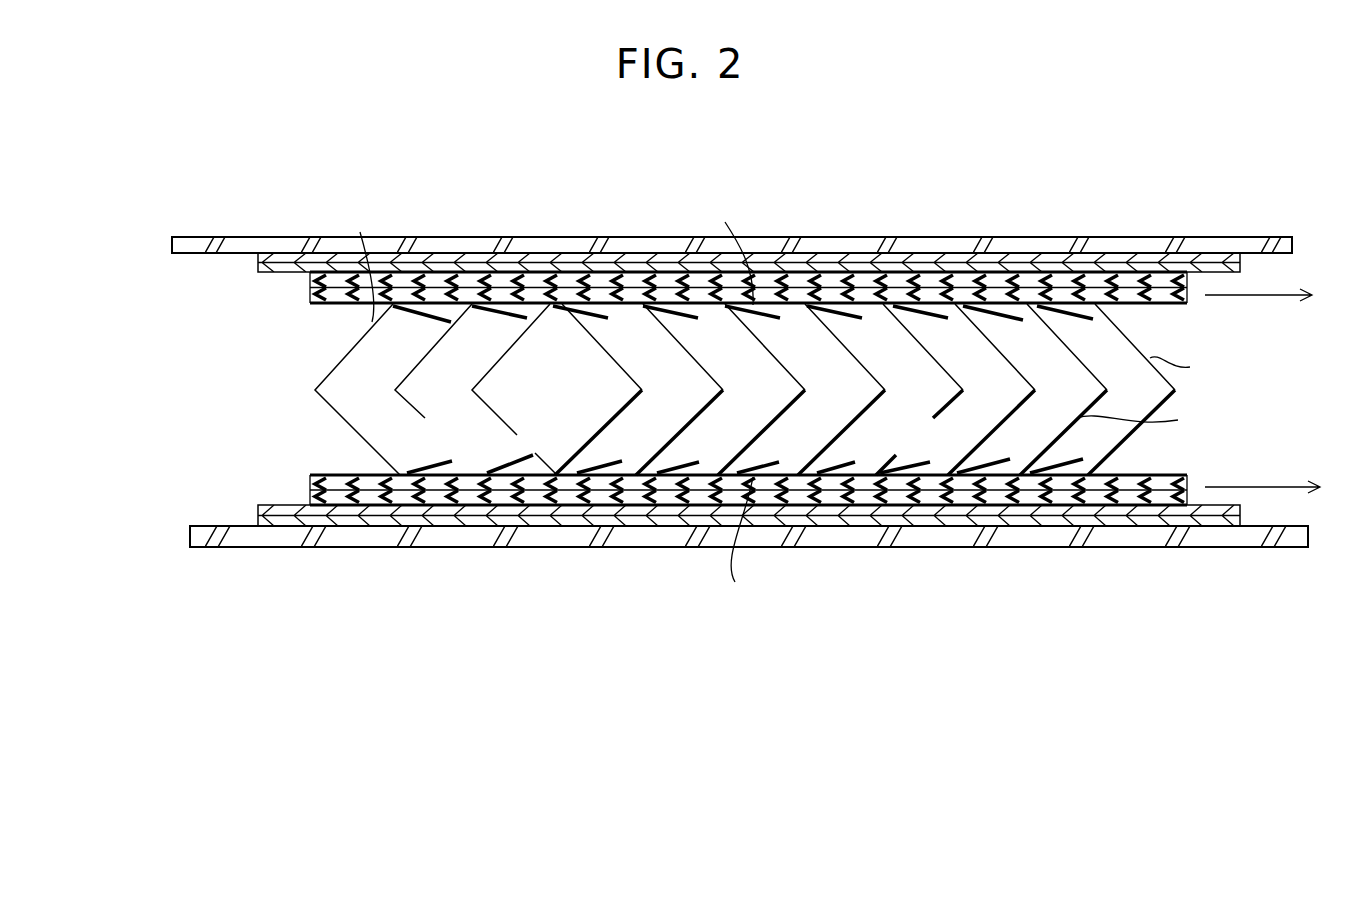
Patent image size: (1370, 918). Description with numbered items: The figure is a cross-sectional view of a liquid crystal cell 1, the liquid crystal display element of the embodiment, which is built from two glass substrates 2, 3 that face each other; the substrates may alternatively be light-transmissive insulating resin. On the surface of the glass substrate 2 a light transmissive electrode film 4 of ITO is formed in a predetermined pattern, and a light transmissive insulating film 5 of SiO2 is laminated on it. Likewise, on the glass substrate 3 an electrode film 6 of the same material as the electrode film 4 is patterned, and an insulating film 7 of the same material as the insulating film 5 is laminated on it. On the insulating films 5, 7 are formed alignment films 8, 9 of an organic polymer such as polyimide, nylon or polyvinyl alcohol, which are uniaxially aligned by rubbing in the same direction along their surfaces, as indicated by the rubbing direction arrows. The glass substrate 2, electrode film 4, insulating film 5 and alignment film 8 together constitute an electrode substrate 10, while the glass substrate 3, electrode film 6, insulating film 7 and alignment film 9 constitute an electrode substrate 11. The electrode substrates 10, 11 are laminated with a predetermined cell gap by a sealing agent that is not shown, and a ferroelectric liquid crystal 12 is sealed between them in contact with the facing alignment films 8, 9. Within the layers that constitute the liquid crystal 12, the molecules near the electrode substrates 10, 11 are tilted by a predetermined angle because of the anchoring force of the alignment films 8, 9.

The liquid crystal cell 1 is at (1193, 160).
The glass substrate 2 is at (242, 540).
The glass substrate 3 is at (233, 252).
The electrode film 4 is at (257, 518).
The insulating film 5 is at (308, 505).
The electrode film 6 is at (258, 273).
The insulating film 7 is at (310, 281).
The alignment film 8 is at (307, 487).
The alignment film 9 is at (310, 298).
The electrode substrate 10 is at (197, 396).
The electrode substrate 11 is at (197, 263).
The liquid crystal 12 is at (297, 395).